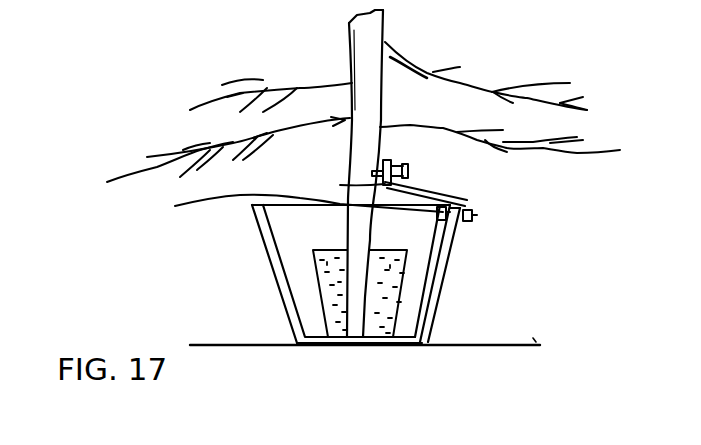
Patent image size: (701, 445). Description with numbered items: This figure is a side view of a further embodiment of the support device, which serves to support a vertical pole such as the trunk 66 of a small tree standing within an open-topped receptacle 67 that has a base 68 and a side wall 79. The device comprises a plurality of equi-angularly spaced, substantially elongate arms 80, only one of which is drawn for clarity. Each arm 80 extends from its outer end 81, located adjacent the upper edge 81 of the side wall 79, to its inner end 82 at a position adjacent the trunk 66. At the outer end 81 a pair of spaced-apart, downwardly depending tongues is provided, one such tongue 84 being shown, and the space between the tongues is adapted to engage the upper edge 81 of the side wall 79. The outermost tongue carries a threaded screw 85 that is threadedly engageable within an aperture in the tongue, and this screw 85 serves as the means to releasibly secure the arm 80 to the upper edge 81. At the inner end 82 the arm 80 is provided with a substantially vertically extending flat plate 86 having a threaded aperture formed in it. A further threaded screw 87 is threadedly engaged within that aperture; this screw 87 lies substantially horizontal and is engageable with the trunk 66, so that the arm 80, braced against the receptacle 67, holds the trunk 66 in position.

The trunk 66 is at (367, 40).
The open-topped receptacle 67 is at (440, 290).
The base 68 is at (430, 342).
The side wall 79 is at (432, 250).
The elongate arm 80 is at (427, 185).
The outer end / upper edge 81 is at (470, 195).
The inner end 82 is at (391, 156).
The tongue 84 is at (175, 206).
The threaded screw 85 is at (477, 215).
The flat plate 86 is at (340, 185).
The threaded screw 87 is at (407, 173).